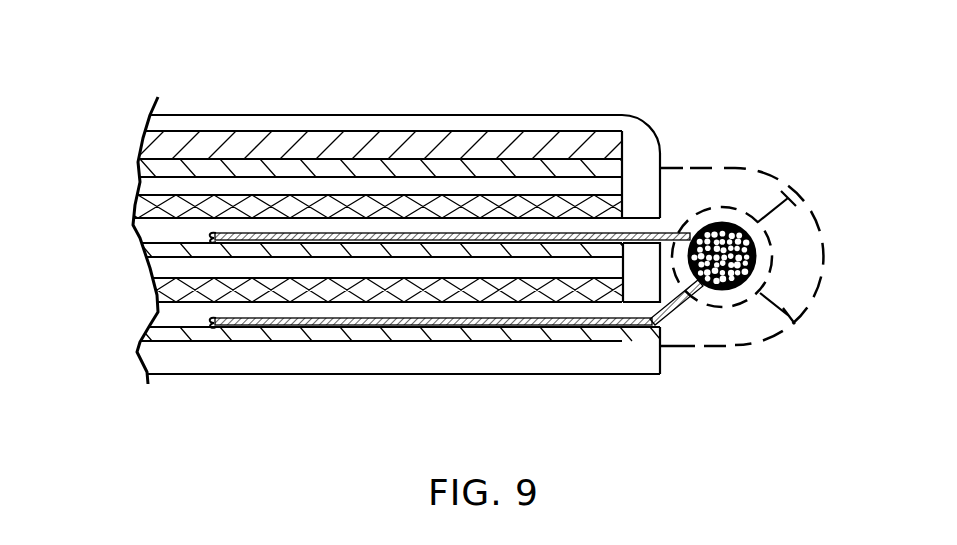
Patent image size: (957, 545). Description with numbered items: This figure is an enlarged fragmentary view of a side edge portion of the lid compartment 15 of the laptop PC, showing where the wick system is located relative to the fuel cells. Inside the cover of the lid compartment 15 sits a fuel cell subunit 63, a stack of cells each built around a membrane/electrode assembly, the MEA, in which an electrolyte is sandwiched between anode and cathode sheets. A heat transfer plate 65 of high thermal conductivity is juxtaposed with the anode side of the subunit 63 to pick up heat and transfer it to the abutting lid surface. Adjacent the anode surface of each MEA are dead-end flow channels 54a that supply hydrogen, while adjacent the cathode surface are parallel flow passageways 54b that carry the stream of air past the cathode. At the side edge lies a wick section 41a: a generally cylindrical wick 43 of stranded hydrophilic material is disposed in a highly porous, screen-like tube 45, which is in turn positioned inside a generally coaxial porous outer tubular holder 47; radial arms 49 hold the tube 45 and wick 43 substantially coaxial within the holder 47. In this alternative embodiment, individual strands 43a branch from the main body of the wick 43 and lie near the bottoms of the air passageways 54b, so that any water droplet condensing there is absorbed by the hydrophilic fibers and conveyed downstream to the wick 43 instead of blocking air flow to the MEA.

The lid compartment 15 is at (252, 108).
The fuel cell subunit 63 is at (122, 180).
The heat transfer plate 65 is at (390, 143).
The membrane/electrode assembly MEA is at (283, 206).
The flow channels 54a is at (143, 186).
The flow passageways 54b is at (157, 313).
The wick strands 43a is at (541, 233).
The porous tube 45 is at (705, 207).
The wick 43 is at (751, 216).
The wick section 41a is at (818, 229).
The outer tubular holder 47 is at (757, 347).
The radial arms 49 is at (783, 303).